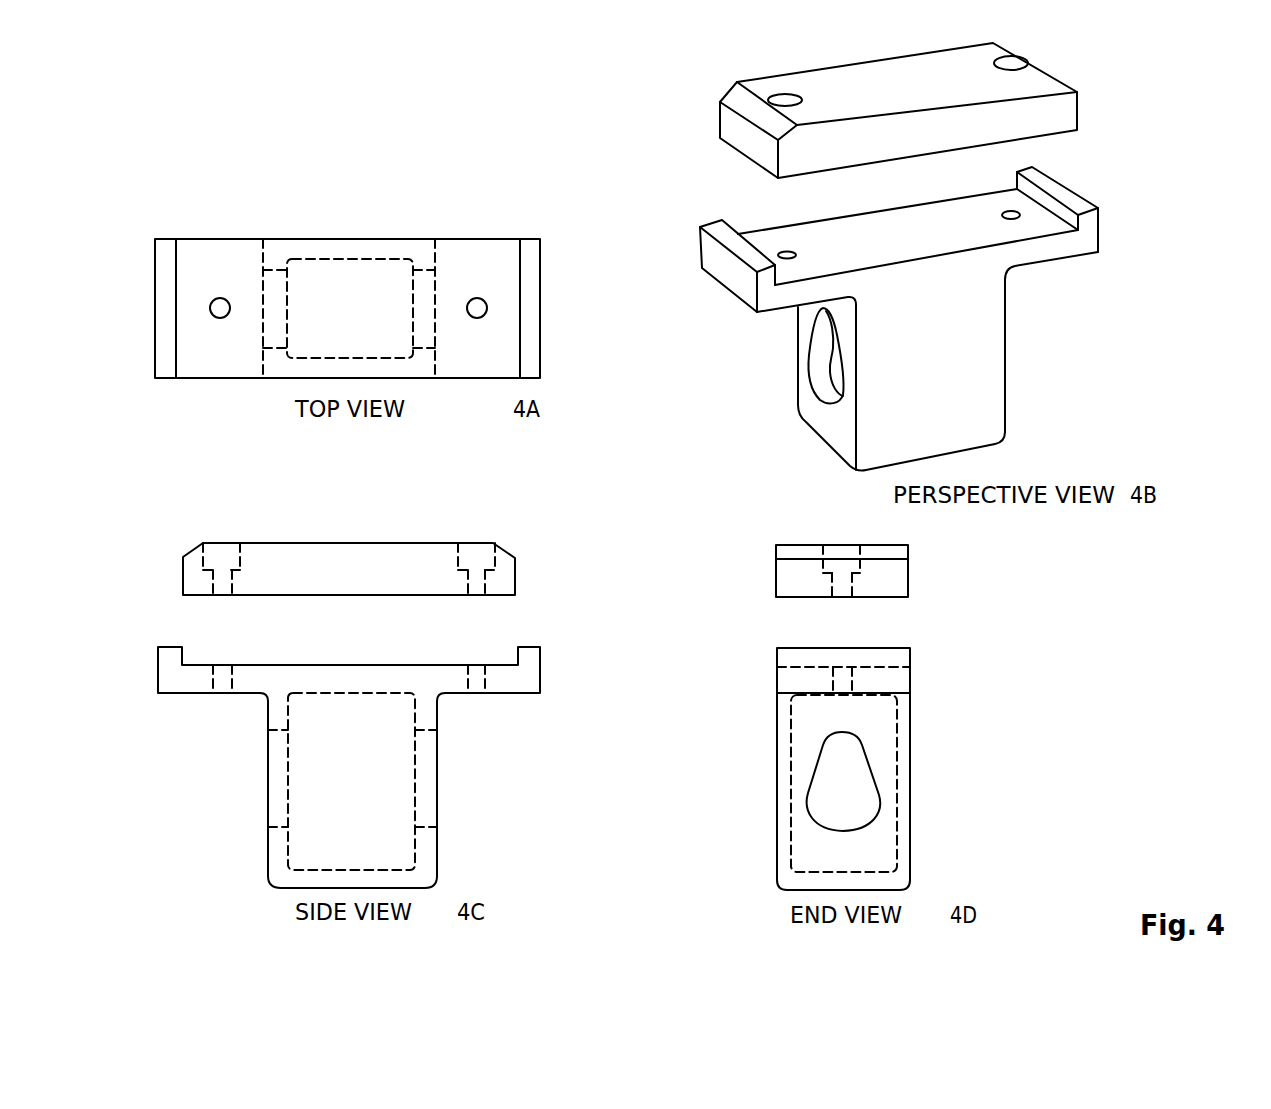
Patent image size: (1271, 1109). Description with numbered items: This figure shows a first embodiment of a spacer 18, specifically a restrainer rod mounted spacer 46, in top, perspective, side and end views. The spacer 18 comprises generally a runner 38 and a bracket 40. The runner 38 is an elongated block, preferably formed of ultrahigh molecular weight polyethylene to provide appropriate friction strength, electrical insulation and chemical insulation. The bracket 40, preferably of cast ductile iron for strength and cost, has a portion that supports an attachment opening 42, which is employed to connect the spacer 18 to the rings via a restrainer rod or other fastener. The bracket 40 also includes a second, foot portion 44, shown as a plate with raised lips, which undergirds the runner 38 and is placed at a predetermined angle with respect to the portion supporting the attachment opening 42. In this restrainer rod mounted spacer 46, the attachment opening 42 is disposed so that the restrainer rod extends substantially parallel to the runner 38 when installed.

The spacer 18 is at (1013, 371).
The runner 38 is at (898, 110).
The bracket 40 is at (357, 236).
The attachment opening 42 is at (425, 308).
The foot portion 44 is at (397, 665).
The restrainer rod mounted spacer 46 is at (1013, 417).